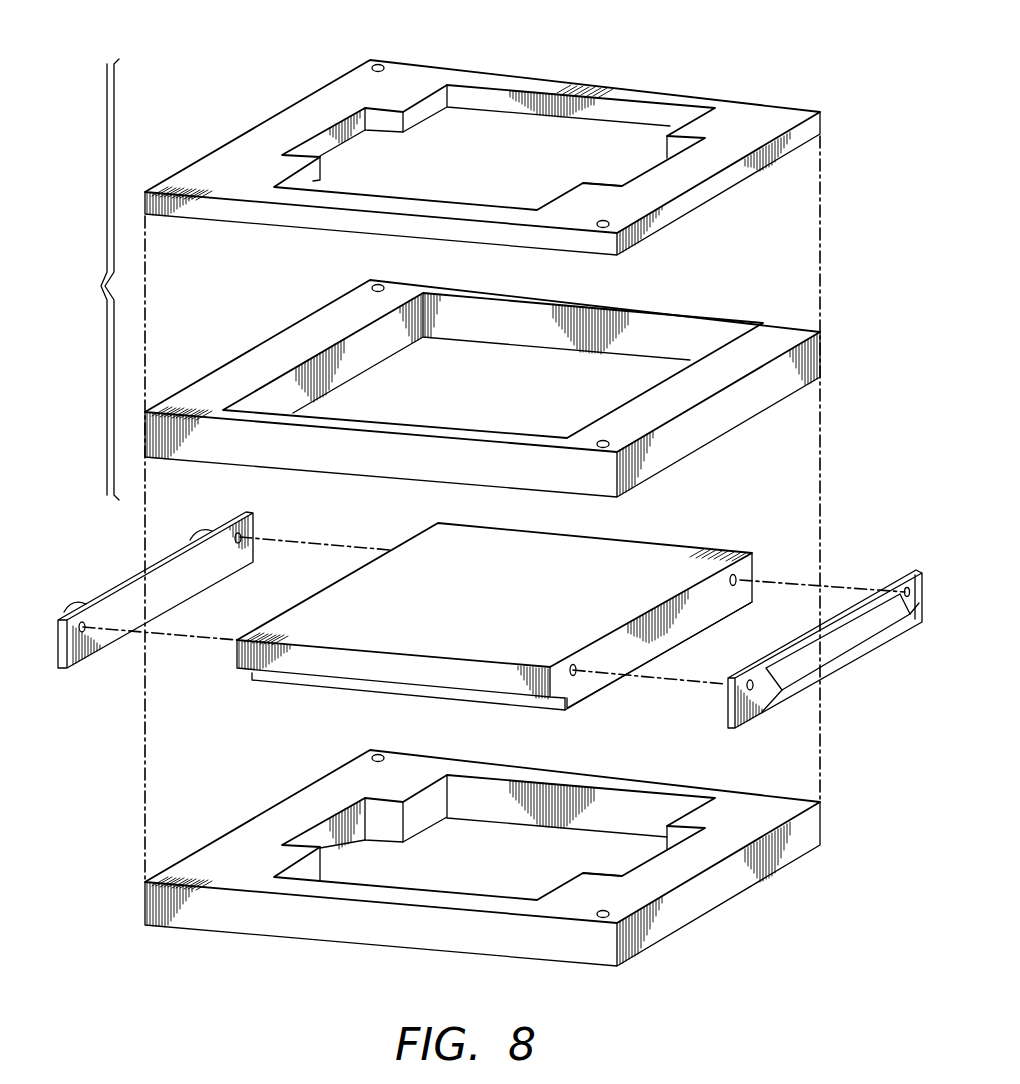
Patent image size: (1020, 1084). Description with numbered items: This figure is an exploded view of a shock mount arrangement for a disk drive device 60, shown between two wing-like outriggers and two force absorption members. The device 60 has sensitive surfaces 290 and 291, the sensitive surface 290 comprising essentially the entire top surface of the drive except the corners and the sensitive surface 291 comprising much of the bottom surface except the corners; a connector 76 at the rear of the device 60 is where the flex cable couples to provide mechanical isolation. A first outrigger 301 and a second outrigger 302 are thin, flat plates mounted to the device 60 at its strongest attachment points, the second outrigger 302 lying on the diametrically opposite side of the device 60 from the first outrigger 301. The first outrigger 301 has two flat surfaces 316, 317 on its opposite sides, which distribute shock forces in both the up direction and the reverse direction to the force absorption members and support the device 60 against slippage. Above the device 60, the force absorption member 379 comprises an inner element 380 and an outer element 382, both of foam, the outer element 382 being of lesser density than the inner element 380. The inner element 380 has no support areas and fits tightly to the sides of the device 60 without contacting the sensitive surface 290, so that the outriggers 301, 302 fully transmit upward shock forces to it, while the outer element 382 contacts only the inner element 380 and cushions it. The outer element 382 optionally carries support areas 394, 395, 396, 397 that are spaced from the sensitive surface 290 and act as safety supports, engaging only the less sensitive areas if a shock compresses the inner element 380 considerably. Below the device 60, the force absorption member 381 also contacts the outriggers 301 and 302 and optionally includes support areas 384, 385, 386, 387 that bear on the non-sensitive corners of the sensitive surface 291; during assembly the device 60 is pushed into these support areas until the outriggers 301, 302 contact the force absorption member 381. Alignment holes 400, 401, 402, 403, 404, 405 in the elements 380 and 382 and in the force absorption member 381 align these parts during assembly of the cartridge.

The device 60 is at (494, 600).
The connector 76 is at (317, 678).
The sensitive surface 290 is at (468, 605).
The sensitive surface 291 is at (264, 686).
The first outrigger 301 is at (825, 639).
The second outrigger 302 is at (216, 570).
The outrigger surface 316 is at (852, 630).
The outrigger surface 317 is at (880, 647).
The force absorption member 379 is at (88, 279).
The inner element 380 is at (273, 347).
The force absorption member 381 is at (211, 852).
The outer element 382 is at (312, 108).
The support area 384 is at (323, 868).
The support area 385 is at (583, 874).
The support area 386 is at (405, 826).
The support area 387 is at (665, 838).
The support area 394 is at (323, 167).
The support area 395 is at (583, 184).
The support area 396 is at (405, 128).
The support area 397 is at (665, 146).
The alignment hole 400 is at (378, 64).
The alignment hole 401 is at (612, 224).
The alignment hole 402 is at (370, 290).
The alignment hole 403 is at (604, 442).
The alignment hole 404 is at (378, 755).
The alignment hole 405 is at (606, 918).